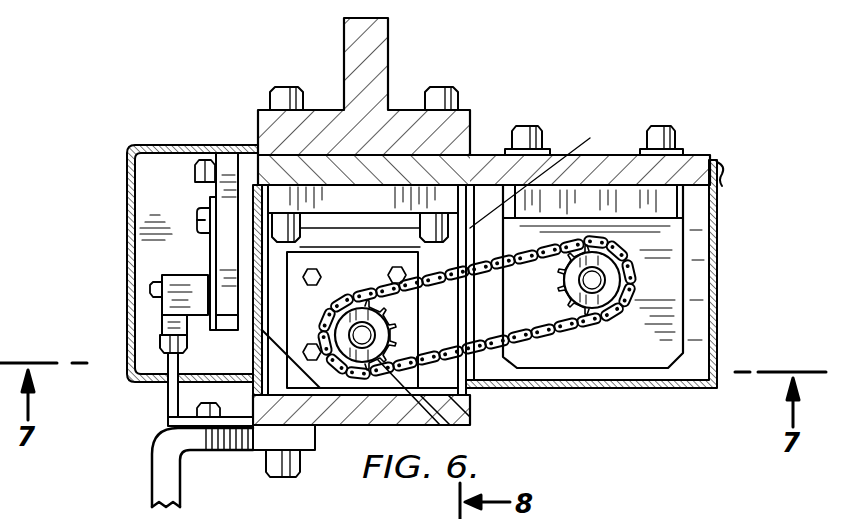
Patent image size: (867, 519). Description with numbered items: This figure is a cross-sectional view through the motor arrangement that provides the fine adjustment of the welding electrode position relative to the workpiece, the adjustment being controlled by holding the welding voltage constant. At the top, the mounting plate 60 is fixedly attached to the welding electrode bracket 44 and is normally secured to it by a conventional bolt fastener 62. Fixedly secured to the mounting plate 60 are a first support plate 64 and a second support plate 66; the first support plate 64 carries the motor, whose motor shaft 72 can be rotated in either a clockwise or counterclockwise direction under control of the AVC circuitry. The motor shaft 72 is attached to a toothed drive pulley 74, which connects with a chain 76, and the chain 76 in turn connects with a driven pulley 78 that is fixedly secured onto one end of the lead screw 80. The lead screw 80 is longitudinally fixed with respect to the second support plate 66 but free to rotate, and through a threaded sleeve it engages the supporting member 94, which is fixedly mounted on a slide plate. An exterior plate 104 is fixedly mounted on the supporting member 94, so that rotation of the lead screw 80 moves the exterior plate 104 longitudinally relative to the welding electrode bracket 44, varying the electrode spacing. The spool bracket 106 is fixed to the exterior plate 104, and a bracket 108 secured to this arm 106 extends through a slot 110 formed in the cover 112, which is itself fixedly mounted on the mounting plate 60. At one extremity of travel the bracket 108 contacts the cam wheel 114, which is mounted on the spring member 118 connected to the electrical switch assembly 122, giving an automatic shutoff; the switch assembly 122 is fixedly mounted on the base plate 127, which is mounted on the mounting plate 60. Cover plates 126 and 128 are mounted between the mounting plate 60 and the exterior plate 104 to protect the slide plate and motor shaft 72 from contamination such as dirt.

The welding electrode bracket 44 is at (384, 54).
The mounting plate 60 is at (693, 168).
The bolt fastener 62 is at (283, 86).
The first support plate 64 is at (665, 263).
The second support plate 66 is at (544, 178).
The motor shaft 72 is at (600, 287).
The toothed drive pulley 74 is at (560, 313).
The chain 76 is at (628, 273).
The driven pulley 78 is at (467, 386).
The lead screw 80 is at (471, 424).
The supporting member 94 is at (463, 428).
The exterior plate 104 is at (332, 412).
The bracket 106 is at (152, 470).
The bracket 108 is at (168, 416).
The slot 110 is at (168, 386).
The cover 112 is at (127, 163).
The cam wheel 114 is at (162, 340).
The spring member 118 is at (162, 323).
The electrical switch assembly 122 is at (186, 265).
The cover plate 126 is at (258, 440).
The base plate 127 is at (227, 163).
The cover plate 128 is at (715, 325).